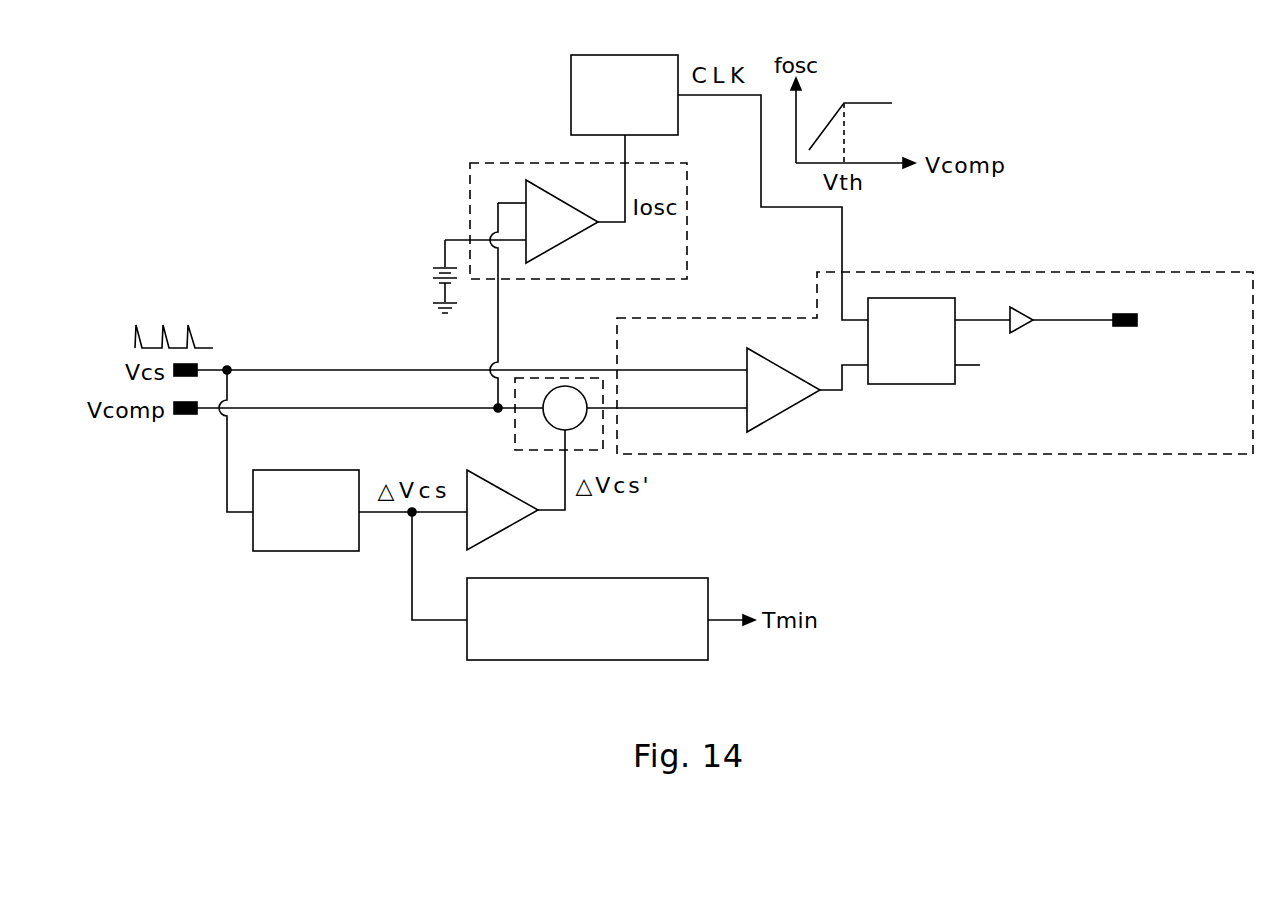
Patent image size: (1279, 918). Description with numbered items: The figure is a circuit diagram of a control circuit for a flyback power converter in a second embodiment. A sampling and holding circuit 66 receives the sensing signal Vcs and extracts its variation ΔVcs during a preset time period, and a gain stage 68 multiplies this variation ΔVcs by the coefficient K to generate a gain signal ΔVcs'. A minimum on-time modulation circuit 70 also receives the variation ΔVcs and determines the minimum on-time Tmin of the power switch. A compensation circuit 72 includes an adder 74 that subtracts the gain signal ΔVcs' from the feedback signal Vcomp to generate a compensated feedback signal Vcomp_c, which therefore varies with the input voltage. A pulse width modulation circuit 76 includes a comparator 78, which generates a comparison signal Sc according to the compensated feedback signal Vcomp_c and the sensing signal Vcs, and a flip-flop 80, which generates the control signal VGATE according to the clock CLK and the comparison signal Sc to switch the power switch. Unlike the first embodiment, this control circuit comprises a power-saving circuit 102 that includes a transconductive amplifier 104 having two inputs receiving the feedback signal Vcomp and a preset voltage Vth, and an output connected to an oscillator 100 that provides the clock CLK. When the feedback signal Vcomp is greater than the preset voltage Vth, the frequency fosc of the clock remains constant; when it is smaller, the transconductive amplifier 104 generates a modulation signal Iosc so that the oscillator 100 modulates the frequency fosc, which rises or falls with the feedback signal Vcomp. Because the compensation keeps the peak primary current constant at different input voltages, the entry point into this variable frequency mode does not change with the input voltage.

The sampling and holding circuit 66 is at (302, 551).
The gain stage 68 is at (505, 530).
The minimum on-time modulation circuit 70 is at (653, 578).
The compensation circuit 72 is at (520, 382).
The adder 74 is at (563, 386).
The pulse width modulation circuit 76 is at (1004, 272).
The comparator 78 is at (788, 362).
The flip-flop 80 is at (905, 384).
The oscillator 100 is at (571, 96).
The power-saving circuit 102 is at (536, 285).
The transconductive amplifier 104 is at (560, 244).